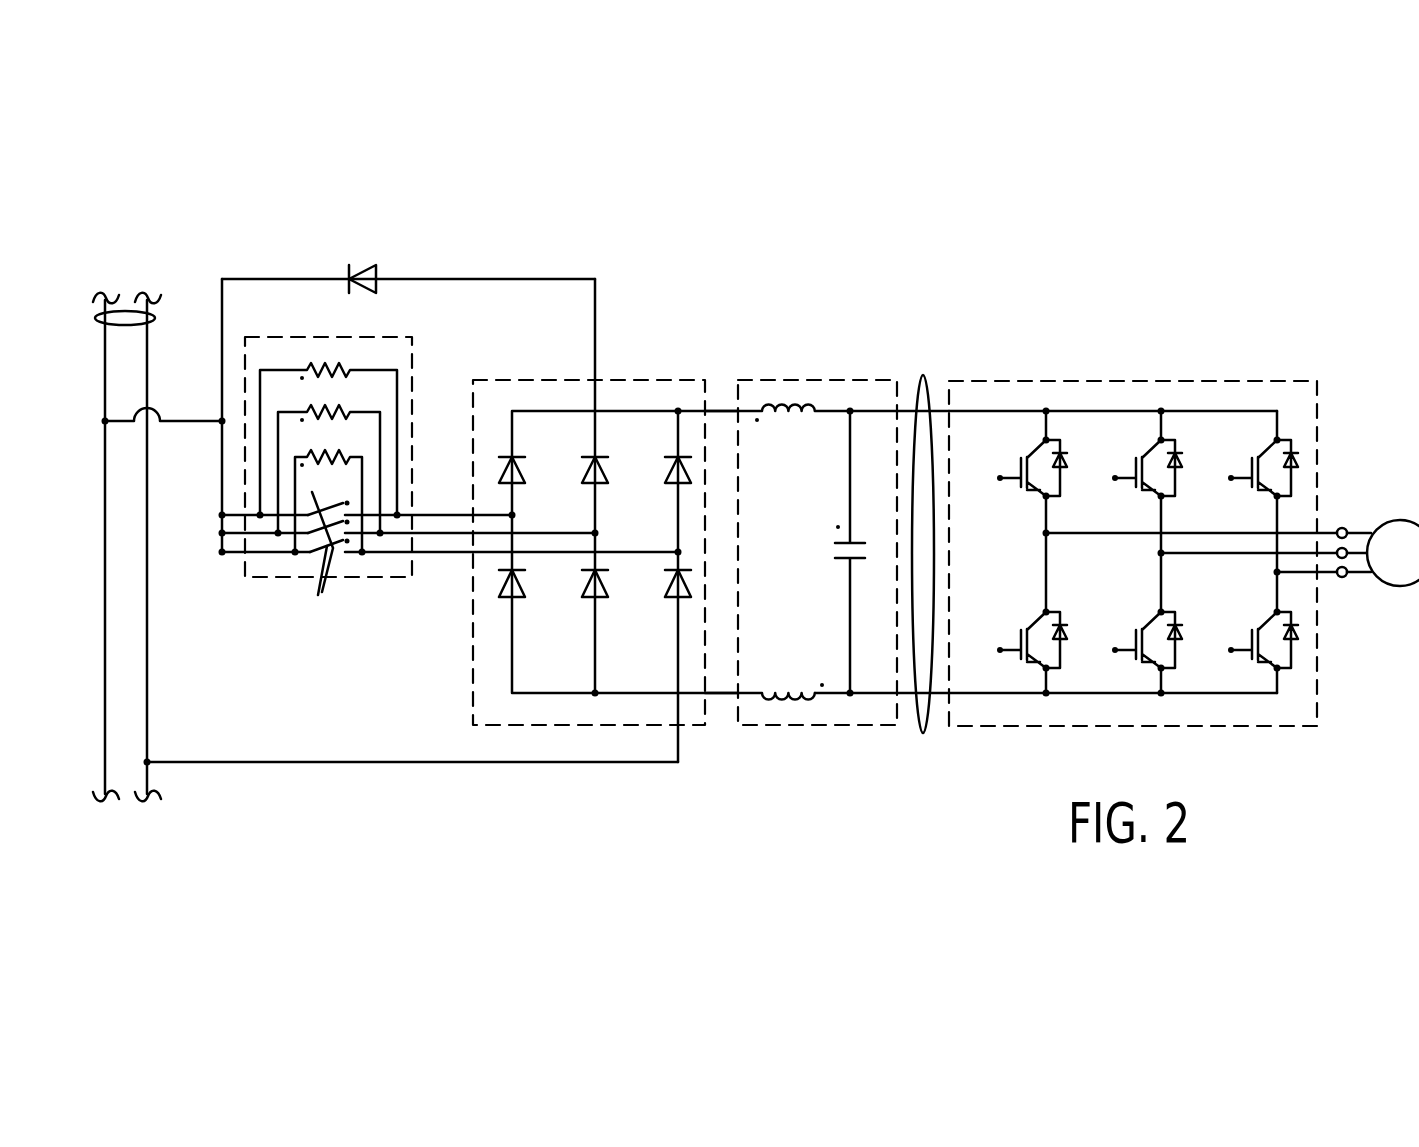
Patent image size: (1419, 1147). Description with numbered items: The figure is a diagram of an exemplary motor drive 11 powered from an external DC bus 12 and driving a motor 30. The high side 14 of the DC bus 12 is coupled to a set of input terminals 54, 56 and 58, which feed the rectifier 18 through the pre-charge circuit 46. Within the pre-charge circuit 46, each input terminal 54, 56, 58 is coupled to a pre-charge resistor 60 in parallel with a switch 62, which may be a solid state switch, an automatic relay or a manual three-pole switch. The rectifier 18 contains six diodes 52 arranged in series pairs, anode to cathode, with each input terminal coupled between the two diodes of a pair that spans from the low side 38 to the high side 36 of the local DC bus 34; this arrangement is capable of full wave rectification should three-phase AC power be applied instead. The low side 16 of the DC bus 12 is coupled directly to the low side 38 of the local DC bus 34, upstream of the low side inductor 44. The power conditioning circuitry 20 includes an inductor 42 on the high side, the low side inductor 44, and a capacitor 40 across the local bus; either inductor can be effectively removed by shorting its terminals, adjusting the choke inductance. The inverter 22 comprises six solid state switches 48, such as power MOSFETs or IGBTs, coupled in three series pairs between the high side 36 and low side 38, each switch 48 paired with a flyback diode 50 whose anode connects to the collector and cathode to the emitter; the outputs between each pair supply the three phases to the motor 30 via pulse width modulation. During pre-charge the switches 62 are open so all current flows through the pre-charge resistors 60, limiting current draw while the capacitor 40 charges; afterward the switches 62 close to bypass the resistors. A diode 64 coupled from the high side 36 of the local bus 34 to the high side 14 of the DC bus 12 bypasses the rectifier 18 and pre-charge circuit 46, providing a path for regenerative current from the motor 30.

The motor drive 11 is at (846, 252).
The DC bus 12 is at (157, 315).
The high side of the DC bus 14 is at (190, 419).
The low side of the DC bus 16 is at (413, 761).
The rectifier 18 is at (659, 380).
The power conditioning circuitry 20 is at (817, 380).
The inverter 22 is at (1137, 381).
The motor 30 is at (1373, 527).
The local DC bus 34 is at (931, 381).
The high side of the local DC bus 36 is at (722, 410).
The low side of the local DC bus 38 is at (718, 697).
The capacitor 40 is at (840, 560).
The inductor 42 is at (790, 418).
The low side inductor 44 is at (783, 690).
The pre-charge circuit 46 is at (323, 336).
The solid state switches 48 is at (1150, 618).
The flyback diode 50 is at (1057, 611).
The diodes 52 is at (527, 481).
The input terminal 54 is at (236, 513).
The input terminal 56 is at (233, 532).
The input terminal 58 is at (232, 553).
The pre-charge resistor 60 is at (352, 455).
The switch 62 is at (312, 497).
The diode 64 is at (359, 267).